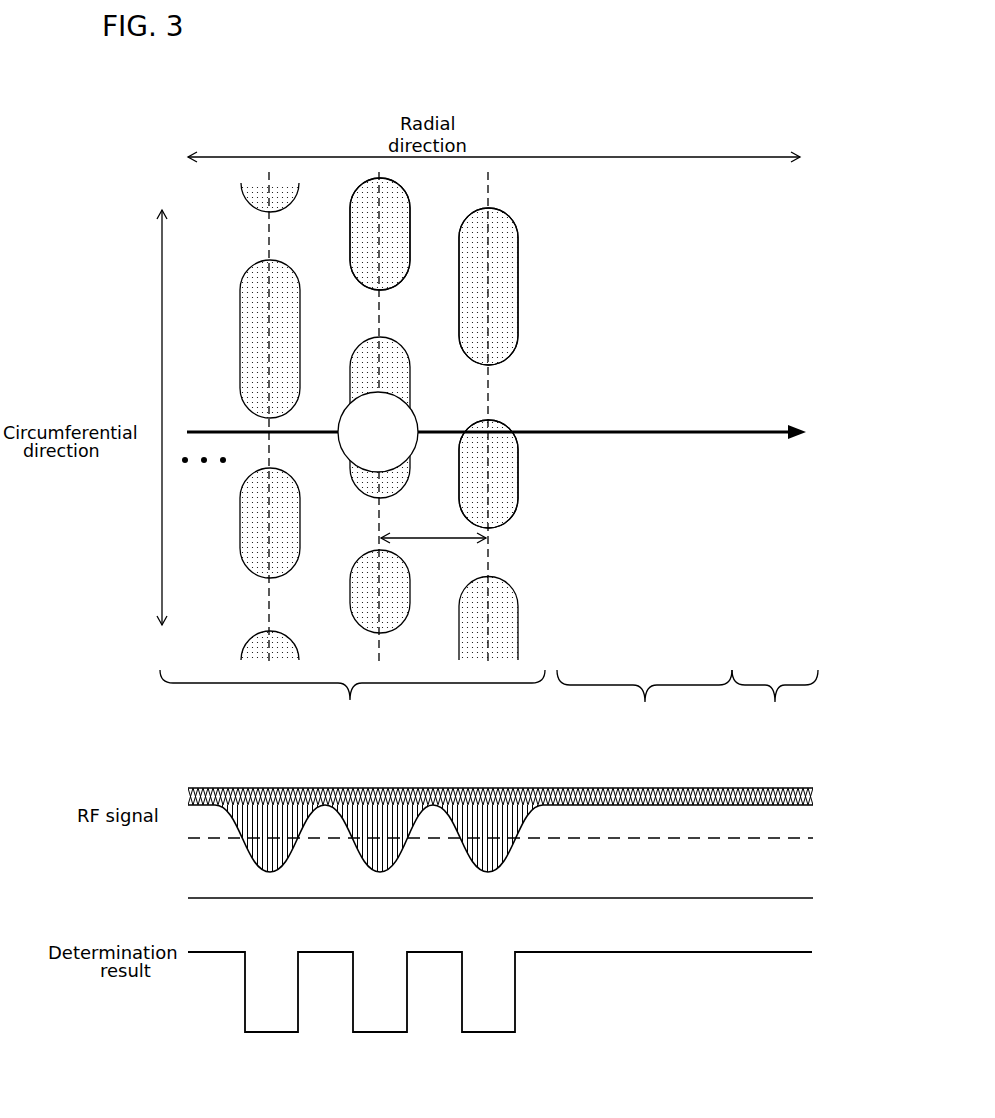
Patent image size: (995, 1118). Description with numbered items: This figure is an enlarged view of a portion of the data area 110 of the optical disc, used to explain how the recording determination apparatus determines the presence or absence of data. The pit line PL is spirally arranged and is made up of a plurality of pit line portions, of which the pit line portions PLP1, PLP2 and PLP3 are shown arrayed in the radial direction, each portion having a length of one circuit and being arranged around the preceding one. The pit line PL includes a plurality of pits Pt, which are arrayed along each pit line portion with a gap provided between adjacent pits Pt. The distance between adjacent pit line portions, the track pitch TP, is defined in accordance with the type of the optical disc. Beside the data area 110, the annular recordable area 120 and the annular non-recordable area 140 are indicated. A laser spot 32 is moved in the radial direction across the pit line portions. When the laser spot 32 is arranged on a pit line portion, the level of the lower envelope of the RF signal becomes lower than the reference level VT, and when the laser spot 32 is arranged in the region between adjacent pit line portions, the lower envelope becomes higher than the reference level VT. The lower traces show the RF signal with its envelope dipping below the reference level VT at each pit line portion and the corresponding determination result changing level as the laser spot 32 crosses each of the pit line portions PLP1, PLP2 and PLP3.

The pit line portion PLP3 is at (262, 172).
The pit line portion PLP2 is at (375, 175).
The pit line portion PLP1 is at (492, 200).
The pit Pt is at (393, 215).
The pit line PL is at (513, 200).
The laser spot 32 is at (415, 412).
The track pitch TP is at (433, 523).
The data area 110 is at (352, 701).
The recordable area 120 is at (644, 701).
The non-recordable area 140 is at (775, 701).
The reference level VT is at (518, 839).